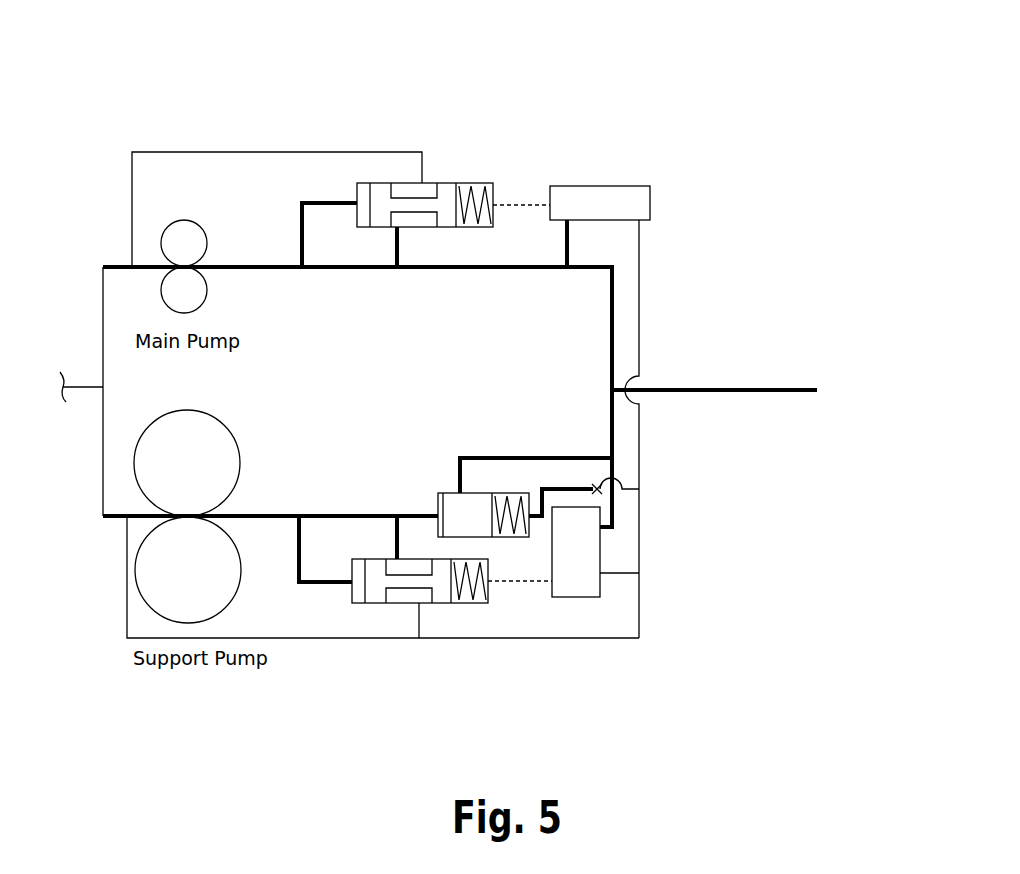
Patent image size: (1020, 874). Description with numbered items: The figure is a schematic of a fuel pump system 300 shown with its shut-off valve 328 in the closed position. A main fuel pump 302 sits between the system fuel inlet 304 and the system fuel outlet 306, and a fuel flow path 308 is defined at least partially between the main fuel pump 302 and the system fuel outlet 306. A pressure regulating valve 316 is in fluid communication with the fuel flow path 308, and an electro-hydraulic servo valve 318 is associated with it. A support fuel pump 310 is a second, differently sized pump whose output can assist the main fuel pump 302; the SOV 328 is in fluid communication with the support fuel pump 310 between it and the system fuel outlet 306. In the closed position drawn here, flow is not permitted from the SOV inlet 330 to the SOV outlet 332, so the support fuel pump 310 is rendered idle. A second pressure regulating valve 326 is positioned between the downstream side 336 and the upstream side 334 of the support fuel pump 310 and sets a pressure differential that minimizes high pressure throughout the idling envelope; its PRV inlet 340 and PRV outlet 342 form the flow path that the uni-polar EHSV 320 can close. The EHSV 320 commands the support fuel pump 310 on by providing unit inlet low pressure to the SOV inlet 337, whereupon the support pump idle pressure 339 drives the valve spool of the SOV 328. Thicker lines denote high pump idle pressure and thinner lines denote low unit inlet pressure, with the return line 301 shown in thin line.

The fuel pump system 300 is at (70, 98).
The return line 301 is at (646, 454).
The main fuel pump 302 is at (214, 257).
The system fuel inlet 304 is at (87, 374).
The system fuel outlet 306 is at (771, 399).
The fuel flow path 308 is at (340, 268).
The support fuel pump 310 is at (224, 512).
The pressure regulating valve 316 is at (483, 183).
The electro-hydraulic servo valve 318 is at (623, 186).
The uni-polar electro-hydraulic servo valve 320 is at (581, 604).
The pressure regulating valve 326 is at (358, 604).
The shut-off valve 328 is at (497, 541).
The SOV inlet 330 is at (437, 511).
The SOV outlet 332 is at (452, 492).
The upstream side of support fuel pump 334 is at (118, 516).
The downstream side of support fuel pump 336 is at (282, 516).
The SOV control inlet 337 is at (531, 513).
The support pump idle pressure 339 is at (270, 518).
The PRV inlet 340 is at (422, 608).
The PRV outlet 342 is at (399, 556).